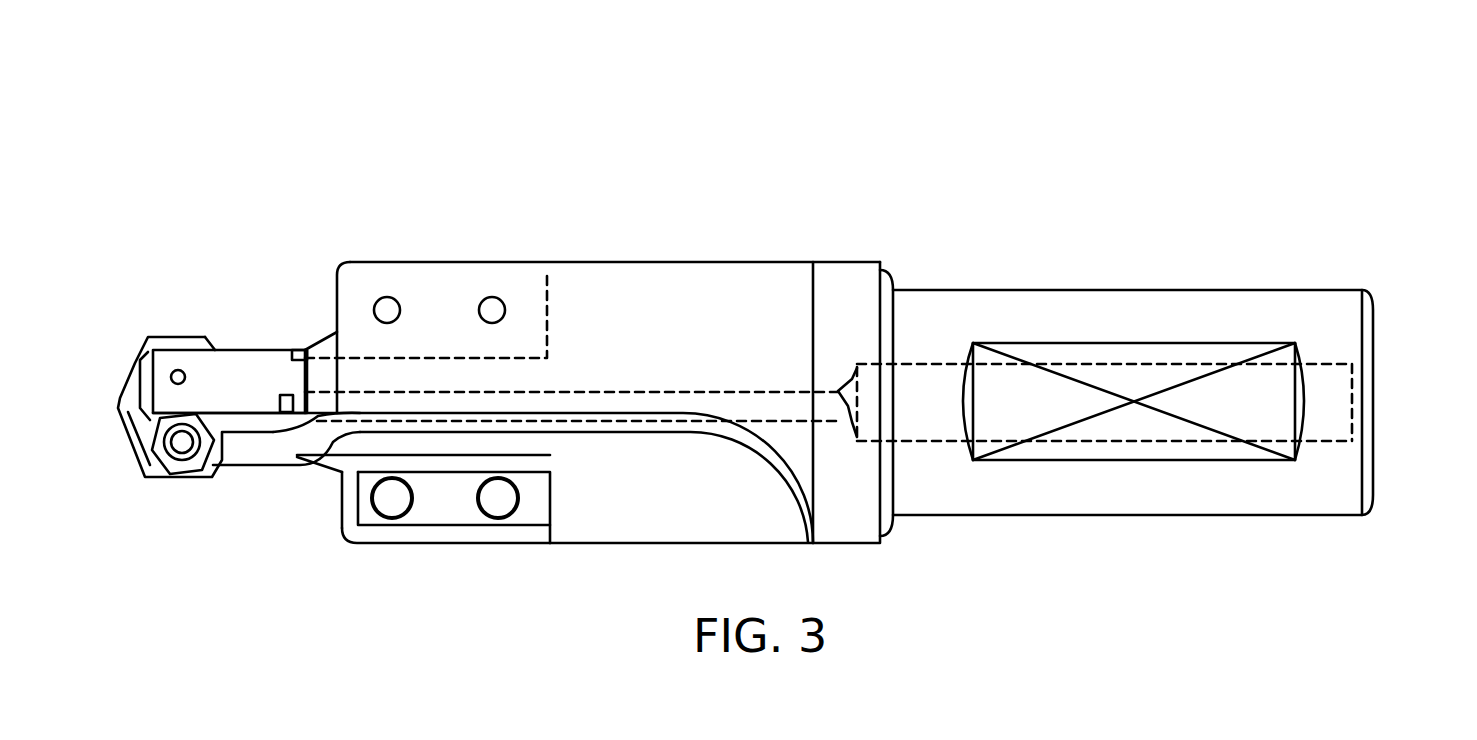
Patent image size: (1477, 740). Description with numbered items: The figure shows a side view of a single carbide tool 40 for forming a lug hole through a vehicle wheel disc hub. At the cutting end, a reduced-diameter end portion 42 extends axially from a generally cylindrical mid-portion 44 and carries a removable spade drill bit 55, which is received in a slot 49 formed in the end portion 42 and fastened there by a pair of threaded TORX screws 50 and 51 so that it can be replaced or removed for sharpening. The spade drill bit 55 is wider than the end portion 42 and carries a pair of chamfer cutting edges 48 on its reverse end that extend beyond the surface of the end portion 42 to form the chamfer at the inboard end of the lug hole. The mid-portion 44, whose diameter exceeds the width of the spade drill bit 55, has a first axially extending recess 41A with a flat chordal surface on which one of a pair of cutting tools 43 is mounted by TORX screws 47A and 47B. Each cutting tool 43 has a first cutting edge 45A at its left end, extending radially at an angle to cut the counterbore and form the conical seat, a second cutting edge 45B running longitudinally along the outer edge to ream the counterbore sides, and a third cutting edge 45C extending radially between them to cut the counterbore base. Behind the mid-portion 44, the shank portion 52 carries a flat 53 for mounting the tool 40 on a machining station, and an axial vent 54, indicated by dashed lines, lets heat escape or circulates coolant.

The tool 40 is at (806, 150).
The first axially extending recess 41A is at (807, 532).
The end portion 42 is at (178, 288).
The cutting tool 43 is at (445, 507).
The mid-portion 44 is at (525, 224).
The first cutting edge 45A is at (317, 480).
The second cutting edge 45B is at (358, 548).
The third cutting edge 45C is at (333, 530).
The TORX screw 47A is at (388, 323).
The TORX screw 47B is at (492, 323).
The chamfer cutting edge 48 is at (207, 338).
The slot 49 is at (667, 518).
The TORX screw 50 is at (183, 442).
The TORX screw 51 is at (186, 378).
The shank portion 52 is at (1148, 215).
The flat 53 is at (1205, 405).
The axial vent 54 is at (1408, 403).
The spade drill bit 55 is at (177, 470).